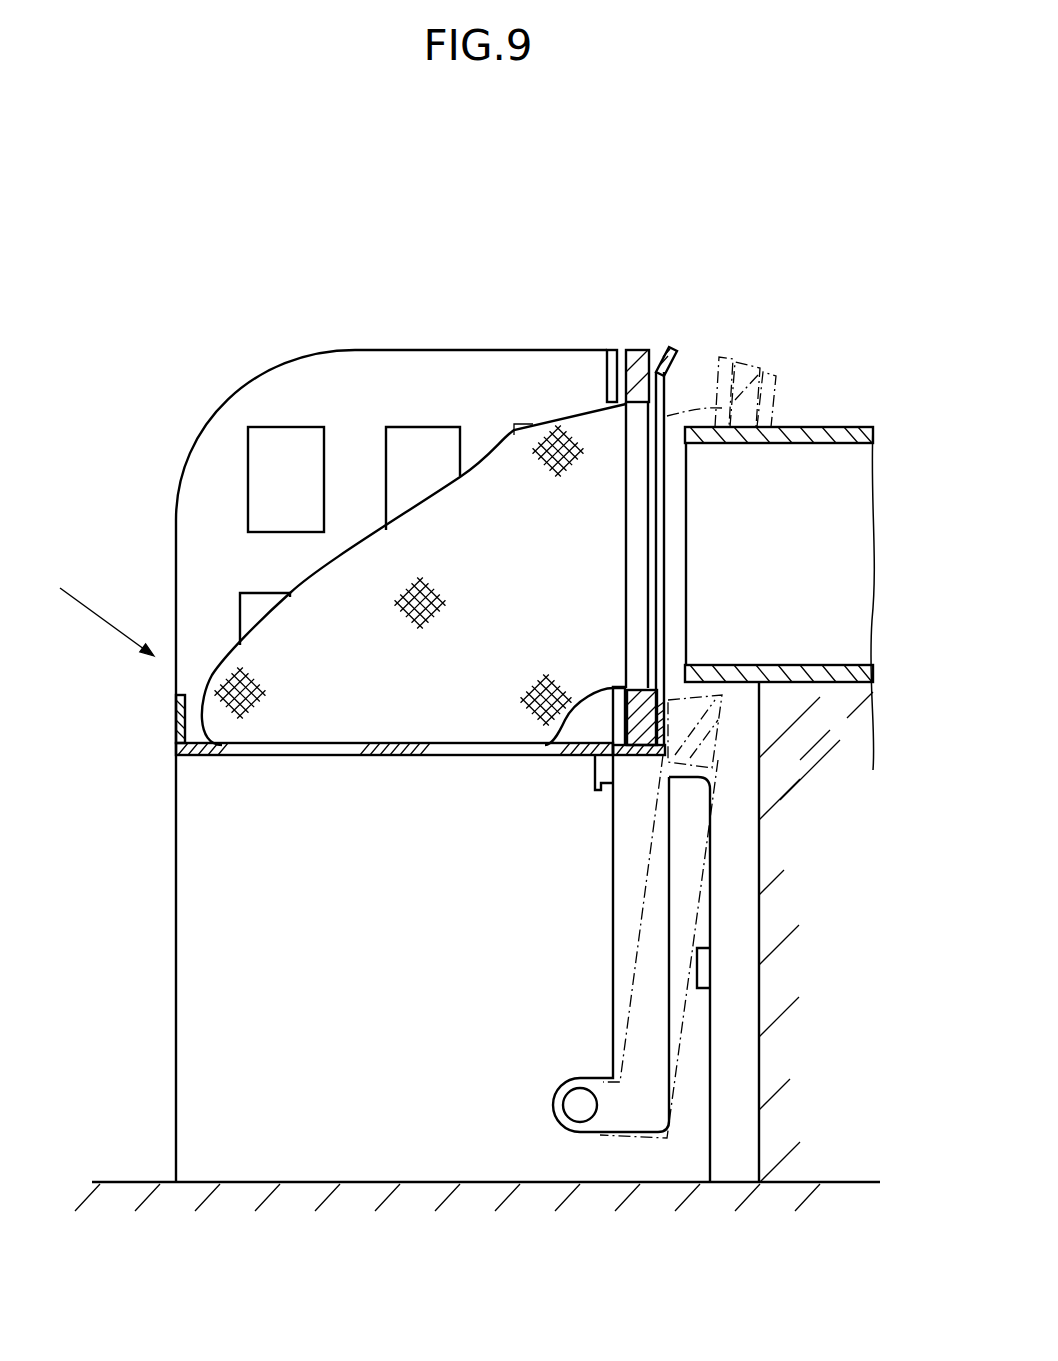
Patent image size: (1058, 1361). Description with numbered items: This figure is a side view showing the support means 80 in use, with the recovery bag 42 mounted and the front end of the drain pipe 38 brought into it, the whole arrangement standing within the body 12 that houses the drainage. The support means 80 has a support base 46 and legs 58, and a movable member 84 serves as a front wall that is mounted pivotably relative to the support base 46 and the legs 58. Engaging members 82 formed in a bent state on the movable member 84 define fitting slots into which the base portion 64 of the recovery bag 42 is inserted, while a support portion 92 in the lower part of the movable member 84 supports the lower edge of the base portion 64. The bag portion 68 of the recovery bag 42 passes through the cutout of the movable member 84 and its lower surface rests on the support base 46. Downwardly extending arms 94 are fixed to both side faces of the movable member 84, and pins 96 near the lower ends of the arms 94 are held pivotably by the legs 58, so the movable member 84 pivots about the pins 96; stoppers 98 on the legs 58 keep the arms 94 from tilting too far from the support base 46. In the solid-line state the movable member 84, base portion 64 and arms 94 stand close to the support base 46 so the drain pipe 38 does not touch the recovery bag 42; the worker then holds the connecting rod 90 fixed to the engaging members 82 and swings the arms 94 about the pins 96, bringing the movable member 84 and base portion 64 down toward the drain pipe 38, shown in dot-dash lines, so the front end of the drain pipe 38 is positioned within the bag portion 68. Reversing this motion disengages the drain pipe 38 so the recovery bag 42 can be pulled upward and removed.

The body 12 is at (780, 1042).
The drain pipe 38 is at (827, 427).
The recovery bag 42 is at (420, 204).
The support base 46 is at (382, 753).
The leg 58 is at (235, 947).
The base portion 64 is at (633, 352).
The bag portion 68 is at (360, 575).
The support means 80 is at (88, 611).
The engaging member 82 is at (662, 520).
The movable member 84 is at (605, 357).
The connecting rod 90 is at (668, 347).
The support portion 92 is at (643, 757).
The arm 94 is at (650, 948).
The pin 96 is at (580, 1105).
The stopper 98 is at (705, 967).